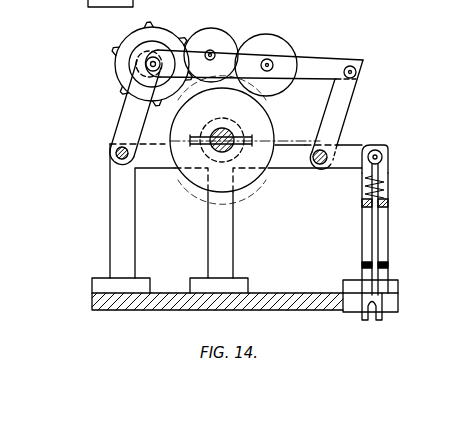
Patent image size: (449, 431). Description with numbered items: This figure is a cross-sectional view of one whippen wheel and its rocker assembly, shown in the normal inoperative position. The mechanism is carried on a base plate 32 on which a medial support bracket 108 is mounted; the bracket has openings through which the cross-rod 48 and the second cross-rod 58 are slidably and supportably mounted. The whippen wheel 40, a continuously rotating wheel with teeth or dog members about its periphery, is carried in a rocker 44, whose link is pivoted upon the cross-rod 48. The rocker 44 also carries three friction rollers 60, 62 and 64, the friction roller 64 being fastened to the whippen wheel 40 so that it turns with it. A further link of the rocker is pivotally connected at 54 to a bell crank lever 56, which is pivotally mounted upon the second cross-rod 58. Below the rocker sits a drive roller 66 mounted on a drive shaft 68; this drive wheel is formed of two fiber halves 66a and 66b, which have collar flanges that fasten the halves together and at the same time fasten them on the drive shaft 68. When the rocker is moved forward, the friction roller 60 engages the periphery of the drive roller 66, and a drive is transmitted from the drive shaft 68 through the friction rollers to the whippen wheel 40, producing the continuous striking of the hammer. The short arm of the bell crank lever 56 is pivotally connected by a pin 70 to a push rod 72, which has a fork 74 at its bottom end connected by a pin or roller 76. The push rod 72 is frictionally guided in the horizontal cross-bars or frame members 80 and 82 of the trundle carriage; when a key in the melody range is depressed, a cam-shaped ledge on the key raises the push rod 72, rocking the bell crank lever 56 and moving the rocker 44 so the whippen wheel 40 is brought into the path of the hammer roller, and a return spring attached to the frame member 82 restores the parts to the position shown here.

The base plate 32 is at (152, 300).
The whippen wheel 40 is at (113, 70).
The rocker 44 is at (334, 44).
The cross-rod 48 is at (117, 158).
The pivotal connection 54 is at (357, 72).
The bell crank lever 56 is at (338, 113).
The second cross-rod 58 is at (321, 166).
The friction roller 60 is at (263, 40).
The friction roller 62 is at (219, 26).
The friction roller 64 is at (140, 45).
The drive roller 66 is at (190, 176).
The fiber half of drive wheel 66a is at (243, 177).
The fiber half of drive wheel 66b is at (263, 115).
The drive shaft 68 is at (221, 131).
The pin 70 is at (383, 157).
The push rod 72 is at (379, 240).
The fork 74 is at (399, 303).
The pin or roller 76 is at (372, 321).
The frame member 80 is at (389, 266).
The frame member 82 is at (389, 206).
The medial support bracket 108 is at (110, 232).